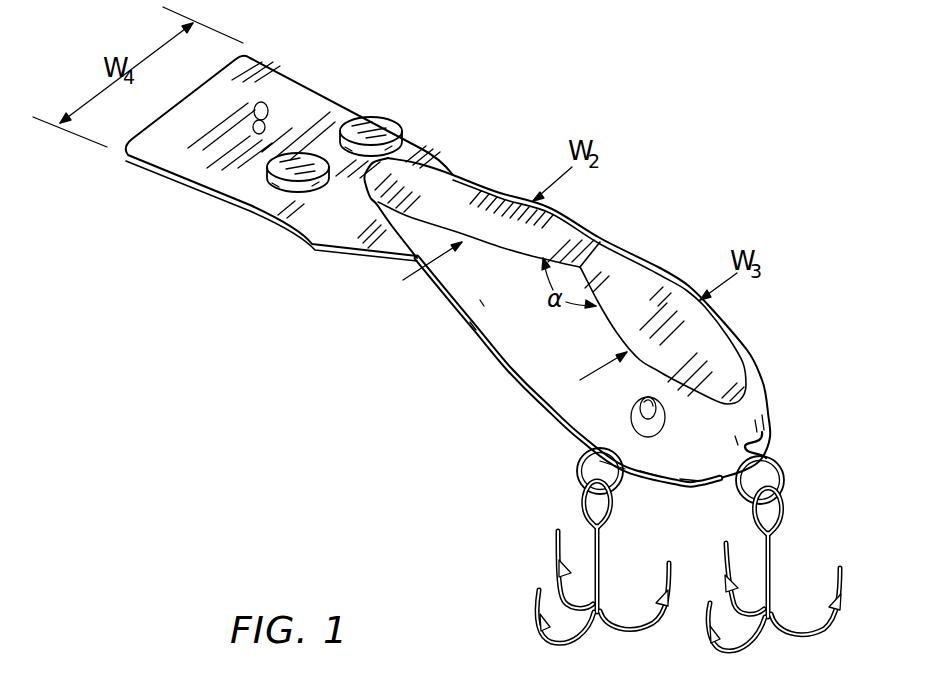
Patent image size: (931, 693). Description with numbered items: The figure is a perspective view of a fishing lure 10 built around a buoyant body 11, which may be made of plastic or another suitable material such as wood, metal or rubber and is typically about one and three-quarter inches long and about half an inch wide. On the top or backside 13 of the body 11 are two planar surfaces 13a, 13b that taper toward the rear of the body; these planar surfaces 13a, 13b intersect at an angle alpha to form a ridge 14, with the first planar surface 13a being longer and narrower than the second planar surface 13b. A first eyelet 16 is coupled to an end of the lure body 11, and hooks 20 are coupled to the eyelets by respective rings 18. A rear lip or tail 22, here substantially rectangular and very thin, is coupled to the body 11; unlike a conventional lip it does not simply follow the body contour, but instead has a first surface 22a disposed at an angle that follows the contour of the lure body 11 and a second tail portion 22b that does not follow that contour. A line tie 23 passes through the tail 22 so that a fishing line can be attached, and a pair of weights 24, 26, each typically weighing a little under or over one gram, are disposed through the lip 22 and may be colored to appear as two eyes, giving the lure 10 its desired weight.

The fishing lure 10 is at (640, 117).
The body 11 is at (753, 349).
The top or backside 13 is at (668, 258).
The planar surface 13a is at (470, 219).
The planar surface (flattened portion) 13b is at (645, 303).
The ridge 14 is at (597, 253).
The first eyelet 16 is at (765, 453).
The rings 18 is at (575, 462).
The hooks 20 is at (537, 563).
The rear lip or tail 22 is at (325, 90).
The first surface 22a is at (205, 153).
The second tail portion 22b is at (430, 147).
The line tie 23 is at (264, 102).
The weight 24 is at (370, 127).
The weight 26 is at (270, 170).